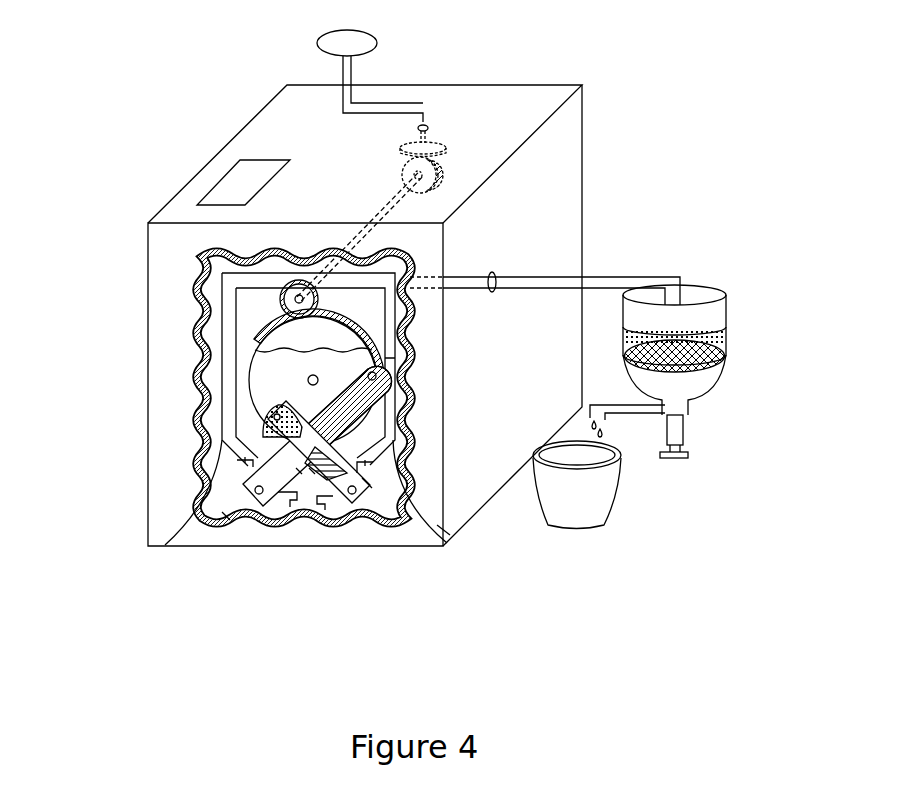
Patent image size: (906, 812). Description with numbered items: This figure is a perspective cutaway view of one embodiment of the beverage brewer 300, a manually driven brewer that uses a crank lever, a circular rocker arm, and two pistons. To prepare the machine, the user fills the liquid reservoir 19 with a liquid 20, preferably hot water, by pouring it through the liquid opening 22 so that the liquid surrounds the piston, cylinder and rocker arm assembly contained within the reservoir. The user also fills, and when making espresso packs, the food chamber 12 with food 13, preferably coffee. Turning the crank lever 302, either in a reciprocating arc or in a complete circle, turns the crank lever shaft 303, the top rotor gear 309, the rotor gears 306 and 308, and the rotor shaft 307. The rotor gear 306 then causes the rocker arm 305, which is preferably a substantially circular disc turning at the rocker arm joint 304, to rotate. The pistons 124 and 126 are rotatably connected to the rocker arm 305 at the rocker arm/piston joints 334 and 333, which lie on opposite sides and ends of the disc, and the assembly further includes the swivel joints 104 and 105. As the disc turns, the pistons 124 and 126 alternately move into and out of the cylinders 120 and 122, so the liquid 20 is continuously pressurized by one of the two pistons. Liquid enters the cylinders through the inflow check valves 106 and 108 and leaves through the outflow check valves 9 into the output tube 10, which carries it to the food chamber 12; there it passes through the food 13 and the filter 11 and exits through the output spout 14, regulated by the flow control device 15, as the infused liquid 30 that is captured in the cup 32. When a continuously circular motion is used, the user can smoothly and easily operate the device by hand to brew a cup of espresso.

The beverage brewer 300 is at (278, 118).
The crank lever 302 is at (335, 40).
The crank lever shaft 303 is at (425, 115).
The top rotor gear 309 is at (447, 147).
The rotor gear 308 is at (435, 175).
The rotor shaft 307 is at (400, 205).
The rotor gear 306 is at (290, 300).
The liquid opening 22 is at (223, 190).
The output tube 10 is at (600, 275).
The food 13 is at (686, 330).
The food chamber 12 is at (713, 320).
The filter 11 is at (725, 348).
The flow control device 15 is at (690, 438).
The output spout 14 is at (640, 410).
The infused liquid 30 is at (607, 436).
The cup 32 is at (585, 520).
The liquid 20 is at (200, 350).
The rocker arm joint 304 is at (313, 380).
The rocker arm 305 is at (276, 418).
The rocker arm/piston joint 334 is at (250, 438).
The outflow check valves 9 is at (220, 497).
The liquid reservoir 19 is at (222, 512).
The swivel joint 104 is at (259, 492).
The cylinder 120 is at (250, 500).
The inflow check valve 106 is at (262, 507).
The piston 124 is at (298, 470).
The piston 126 is at (312, 470).
The cylinder 122 is at (346, 497).
The inflow check valve 108 is at (323, 512).
The swivel joint 105 is at (370, 480).
The rocker arm/piston joint 333 is at (450, 528).